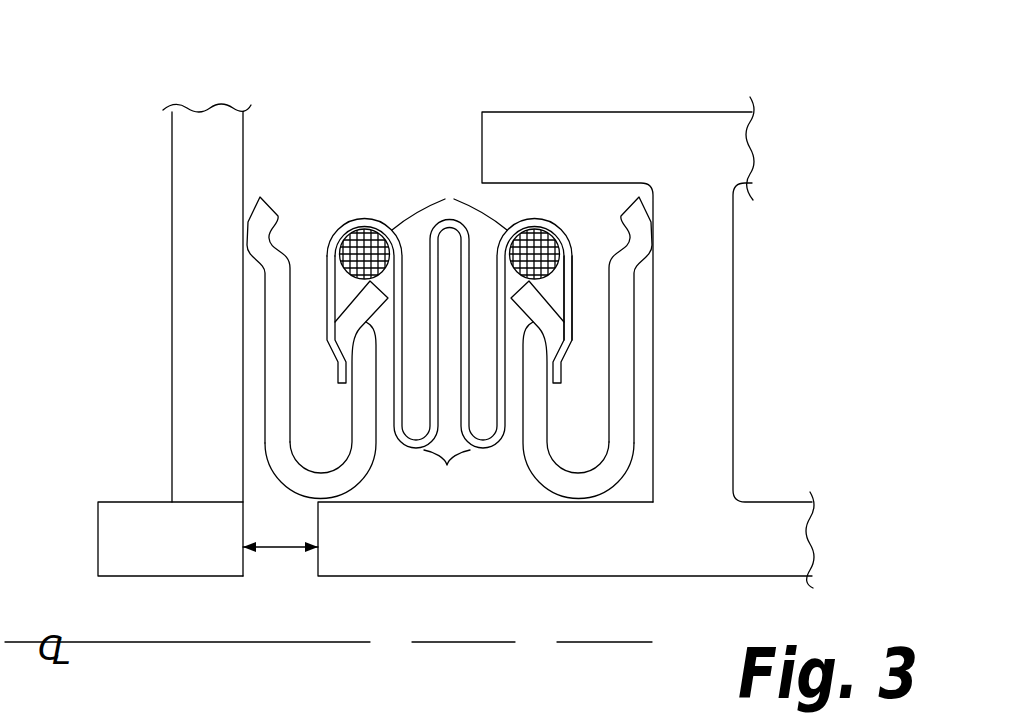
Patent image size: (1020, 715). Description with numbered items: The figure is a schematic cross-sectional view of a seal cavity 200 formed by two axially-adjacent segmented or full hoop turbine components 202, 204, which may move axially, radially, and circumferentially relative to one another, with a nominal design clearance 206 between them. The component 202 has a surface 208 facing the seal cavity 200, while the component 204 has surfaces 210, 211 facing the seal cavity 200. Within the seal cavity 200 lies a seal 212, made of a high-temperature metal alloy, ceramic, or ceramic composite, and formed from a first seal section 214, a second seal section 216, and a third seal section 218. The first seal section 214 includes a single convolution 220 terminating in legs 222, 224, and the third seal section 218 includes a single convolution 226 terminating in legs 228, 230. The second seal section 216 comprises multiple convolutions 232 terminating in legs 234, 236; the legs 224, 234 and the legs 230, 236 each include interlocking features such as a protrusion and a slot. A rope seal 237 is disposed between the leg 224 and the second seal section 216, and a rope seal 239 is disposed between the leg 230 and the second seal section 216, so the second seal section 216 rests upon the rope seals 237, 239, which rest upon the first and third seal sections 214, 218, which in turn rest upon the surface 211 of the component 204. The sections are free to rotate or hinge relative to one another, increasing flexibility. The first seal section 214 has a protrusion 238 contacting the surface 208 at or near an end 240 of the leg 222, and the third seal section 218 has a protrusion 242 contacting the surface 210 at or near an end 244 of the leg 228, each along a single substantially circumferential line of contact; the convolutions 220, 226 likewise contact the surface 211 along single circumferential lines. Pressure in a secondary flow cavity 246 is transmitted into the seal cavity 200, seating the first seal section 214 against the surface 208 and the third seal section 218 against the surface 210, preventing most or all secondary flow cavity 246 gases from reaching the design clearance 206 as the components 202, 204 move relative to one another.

The seal cavity 200 is at (296, 57).
The turbine component 202 is at (168, 578).
The turbine component 204 is at (692, 578).
The nominal design clearance 206 is at (298, 555).
The surface 208 is at (258, 89).
The surface 210 is at (643, 460).
The surface 211 is at (503, 497).
The seal 212 is at (406, 131).
The first seal section 214 is at (252, 305).
The second seal section 216 is at (369, 203).
The third seal section 218 is at (648, 320).
The convolution 220 is at (170, 502).
The leg 222 is at (264, 360).
The leg 224 is at (352, 420).
The convolution 226 is at (620, 487).
The leg 228 is at (634, 383).
The leg 230 is at (547, 418).
The convolutions 232 is at (449, 331).
The leg 234 is at (326, 270).
The leg 236 is at (573, 275).
The rope seal 237 is at (342, 262).
The protrusion 238 is at (247, 232).
The rope seal 239 is at (556, 259).
The end 240 is at (276, 210).
The protrusion 242 is at (654, 232).
The end 244 is at (645, 200).
The secondary flow cavity 246 is at (478, 27).